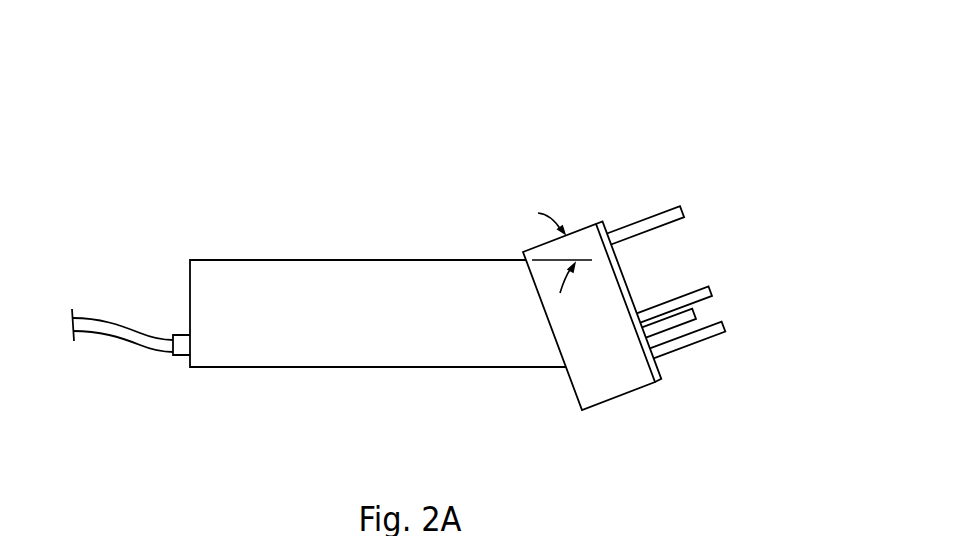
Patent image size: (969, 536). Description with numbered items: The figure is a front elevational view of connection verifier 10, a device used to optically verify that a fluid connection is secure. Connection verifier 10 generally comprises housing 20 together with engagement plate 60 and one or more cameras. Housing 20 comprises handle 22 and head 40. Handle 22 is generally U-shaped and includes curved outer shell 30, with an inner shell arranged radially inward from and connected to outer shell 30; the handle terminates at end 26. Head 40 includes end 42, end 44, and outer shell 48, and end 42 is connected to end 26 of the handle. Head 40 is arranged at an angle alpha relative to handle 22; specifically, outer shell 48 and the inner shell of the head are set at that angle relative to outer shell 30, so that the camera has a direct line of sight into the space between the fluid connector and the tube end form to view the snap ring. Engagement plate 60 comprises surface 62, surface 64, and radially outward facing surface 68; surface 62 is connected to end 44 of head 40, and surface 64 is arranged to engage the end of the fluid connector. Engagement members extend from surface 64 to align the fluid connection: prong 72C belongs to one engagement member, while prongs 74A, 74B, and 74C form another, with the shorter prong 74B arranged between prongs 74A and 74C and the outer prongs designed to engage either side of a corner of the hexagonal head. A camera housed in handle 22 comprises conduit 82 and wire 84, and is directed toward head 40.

The connection verifier 10 is at (243, 62).
The housing 20 is at (207, 277).
The handle 22 is at (262, 333).
The end 26 is at (556, 345).
The outer shell 30 is at (257, 278).
The head 40 is at (593, 393).
The end 42 is at (578, 398).
The end 44 is at (643, 350).
The outer shell 48 is at (585, 237).
The engagement plate 60 is at (630, 278).
The surface 62 is at (655, 378).
The surface 64 is at (625, 250).
The radially outward facing surface 68 is at (605, 222).
The prong 72C is at (677, 203).
The prong 74A is at (722, 294).
The prong 74B is at (712, 316).
The prong 74C is at (708, 345).
The conduit 82 is at (185, 350).
The wire 84 is at (84, 328).